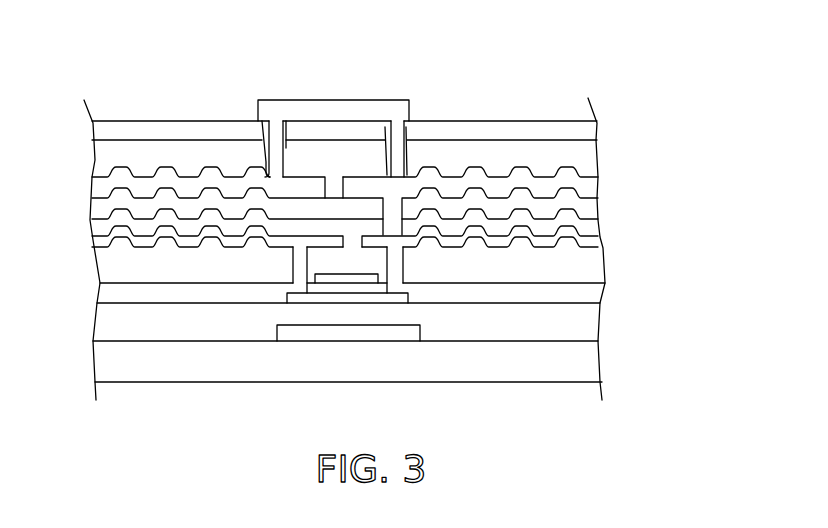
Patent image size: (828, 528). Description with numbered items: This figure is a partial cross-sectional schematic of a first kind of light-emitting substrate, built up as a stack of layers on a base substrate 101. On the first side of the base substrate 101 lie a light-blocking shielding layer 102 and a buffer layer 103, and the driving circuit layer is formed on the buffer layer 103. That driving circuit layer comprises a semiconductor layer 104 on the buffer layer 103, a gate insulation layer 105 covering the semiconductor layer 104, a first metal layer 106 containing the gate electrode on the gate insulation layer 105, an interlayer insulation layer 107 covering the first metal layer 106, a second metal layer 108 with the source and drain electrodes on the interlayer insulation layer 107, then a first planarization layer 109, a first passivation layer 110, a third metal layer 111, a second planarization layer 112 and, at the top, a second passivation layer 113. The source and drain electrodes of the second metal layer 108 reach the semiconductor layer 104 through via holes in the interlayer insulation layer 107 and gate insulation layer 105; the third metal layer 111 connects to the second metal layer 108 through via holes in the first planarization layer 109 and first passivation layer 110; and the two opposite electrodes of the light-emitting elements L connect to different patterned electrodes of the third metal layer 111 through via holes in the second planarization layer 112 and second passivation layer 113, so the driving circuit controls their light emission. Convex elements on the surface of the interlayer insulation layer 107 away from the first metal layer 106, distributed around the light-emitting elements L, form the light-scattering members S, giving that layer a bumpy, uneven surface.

The base substrate 101 is at (590, 367).
The shielding layer 102 is at (407, 335).
The buffer layer 103 is at (593, 322).
The semiconductor layer 104 is at (375, 302).
The gate insulation layer 105 is at (592, 295).
The first metal layer 106 is at (333, 282).
The interlayer insulation layer 107 is at (597, 272).
The second metal layer 108 is at (603, 238).
The first planarization layer 109 is at (597, 222).
The first passivation layer 110 is at (595, 198).
The third metal layer 111 is at (595, 180).
The second planarization layer 112 is at (593, 155).
The second passivation layer 113 is at (596, 124).
The light-emitting elements L is at (403, 110).
The light-scattering members S is at (118, 237).